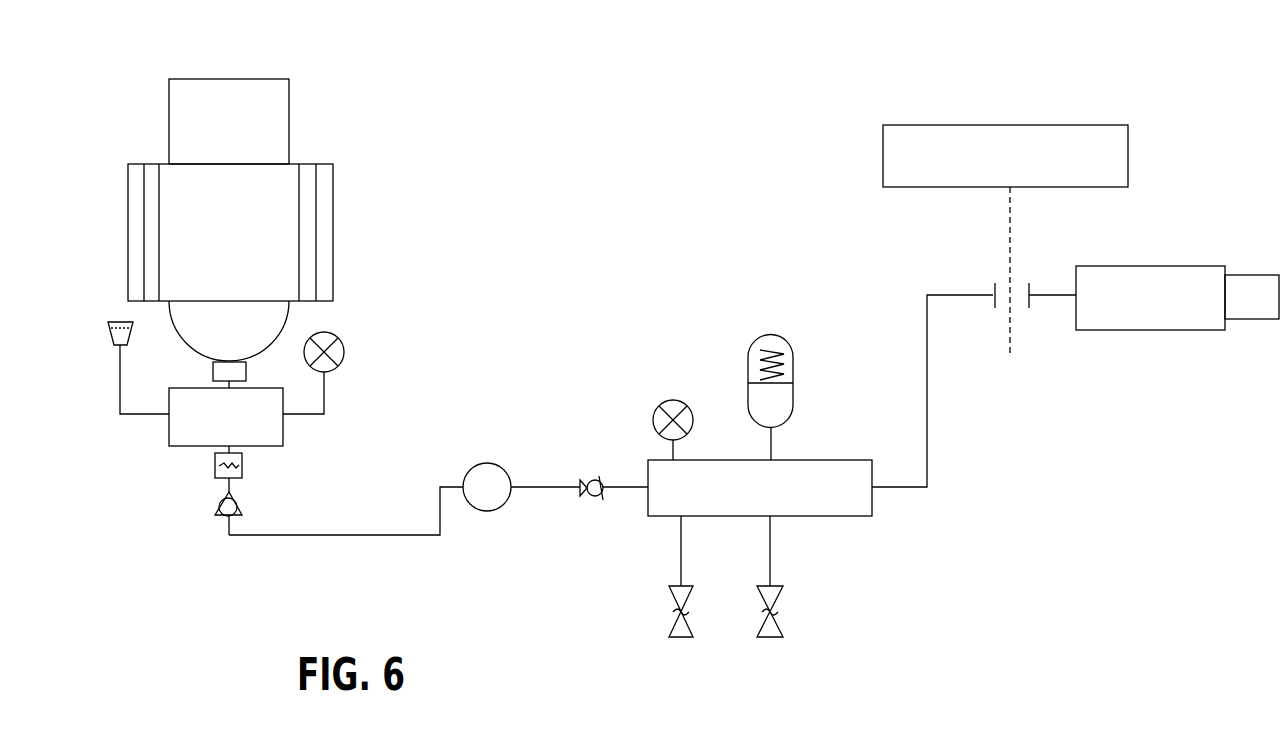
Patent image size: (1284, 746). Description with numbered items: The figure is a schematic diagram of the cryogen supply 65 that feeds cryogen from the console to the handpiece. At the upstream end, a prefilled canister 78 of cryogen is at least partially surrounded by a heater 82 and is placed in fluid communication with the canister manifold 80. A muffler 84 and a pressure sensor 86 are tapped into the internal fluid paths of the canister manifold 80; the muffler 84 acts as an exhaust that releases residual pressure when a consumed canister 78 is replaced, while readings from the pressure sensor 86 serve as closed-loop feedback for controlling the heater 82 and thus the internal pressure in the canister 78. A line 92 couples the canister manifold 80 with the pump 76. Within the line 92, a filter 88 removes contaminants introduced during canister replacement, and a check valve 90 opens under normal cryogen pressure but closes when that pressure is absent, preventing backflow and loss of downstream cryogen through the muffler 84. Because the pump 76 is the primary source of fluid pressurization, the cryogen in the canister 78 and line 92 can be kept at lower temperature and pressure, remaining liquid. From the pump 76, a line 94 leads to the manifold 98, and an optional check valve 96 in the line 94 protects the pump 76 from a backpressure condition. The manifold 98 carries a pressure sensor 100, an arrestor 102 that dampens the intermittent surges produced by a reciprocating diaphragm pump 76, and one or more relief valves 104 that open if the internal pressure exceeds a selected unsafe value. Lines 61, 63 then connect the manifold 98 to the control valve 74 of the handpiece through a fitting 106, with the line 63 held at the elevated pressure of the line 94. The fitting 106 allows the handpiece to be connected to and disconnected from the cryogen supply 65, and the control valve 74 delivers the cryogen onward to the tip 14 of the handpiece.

The cryogen supply 65 is at (722, 58).
The canister 78 is at (289, 88).
The heater 82 is at (288, 227).
The muffler 84 is at (108, 333).
The pressure sensor 86 is at (344, 352).
The canister manifold 80 is at (272, 446).
The filter 88 is at (215, 465).
The check valve 90 is at (243, 507).
The line 92 is at (325, 535).
The pump 76 is at (487, 511).
The line 94 is at (548, 490).
The check valve 96 is at (591, 479).
The pressure sensor 100 is at (667, 405).
The arrestor 102 is at (767, 335).
The manifold 98 is at (813, 460).
The relief valves 104 is at (668, 604).
The line 61 is at (927, 350).
The fitting 106 is at (1018, 283).
The line 63 is at (1057, 298).
The control valve 74 is at (1178, 266).
The tip 14 is at (1237, 275).